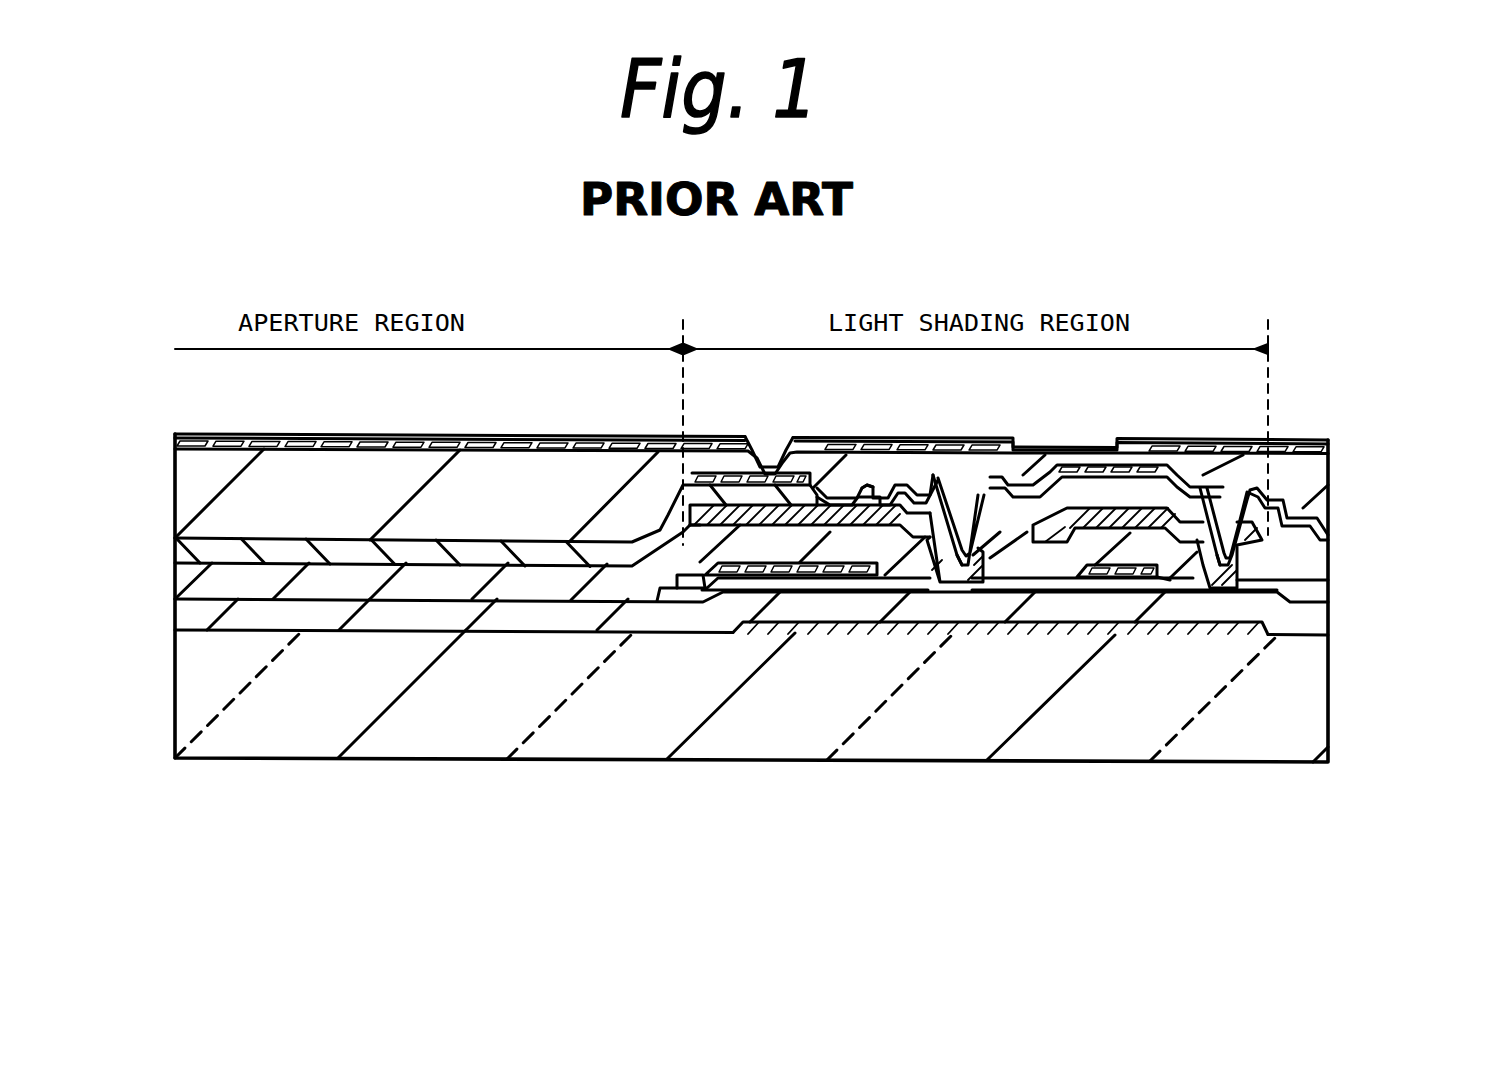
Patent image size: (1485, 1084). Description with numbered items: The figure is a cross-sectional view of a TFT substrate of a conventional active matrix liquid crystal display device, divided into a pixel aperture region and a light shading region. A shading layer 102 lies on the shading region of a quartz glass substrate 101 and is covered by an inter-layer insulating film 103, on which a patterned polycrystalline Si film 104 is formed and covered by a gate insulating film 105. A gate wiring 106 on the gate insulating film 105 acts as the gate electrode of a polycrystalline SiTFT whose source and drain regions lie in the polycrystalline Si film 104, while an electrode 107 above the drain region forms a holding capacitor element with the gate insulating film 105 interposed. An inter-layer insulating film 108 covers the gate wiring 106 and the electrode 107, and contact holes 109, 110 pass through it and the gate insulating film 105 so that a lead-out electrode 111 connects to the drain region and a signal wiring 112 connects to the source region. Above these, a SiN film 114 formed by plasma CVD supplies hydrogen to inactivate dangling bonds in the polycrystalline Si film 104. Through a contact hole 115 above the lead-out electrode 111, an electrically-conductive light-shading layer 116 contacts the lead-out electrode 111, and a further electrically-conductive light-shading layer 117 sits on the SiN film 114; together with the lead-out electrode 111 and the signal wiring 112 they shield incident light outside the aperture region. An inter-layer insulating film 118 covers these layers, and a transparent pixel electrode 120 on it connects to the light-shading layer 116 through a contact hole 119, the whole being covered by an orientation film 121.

The quartz glass substrate 101 is at (1300, 708).
The shading layer 102 is at (985, 630).
The inter-layer insulating film 103 is at (1310, 625).
The polycrystalline Si film 104 is at (1047, 590).
The gate insulating film 105 is at (1100, 566).
The gate wiring 106 is at (1130, 567).
The electrode 107 is at (770, 575).
The inter-layer insulating film 108 is at (1315, 590).
The contact hole 109 is at (935, 515).
The contact hole 110 is at (1200, 488).
The lead-out electrode 111 is at (848, 515).
The signal wiring 112 is at (1290, 520).
The SiN film 114 is at (1273, 500).
The contact hole 115 is at (815, 488).
The electrically-conductive light-shading layer 116 is at (870, 484).
The electrically-conductive light-shading layer 117 is at (1100, 465).
The inter-layer insulating film 118 is at (1305, 467).
The contact hole 119 is at (757, 455).
The transparent pixel electrode 120 is at (497, 440).
The orientation film 121 is at (293, 432).